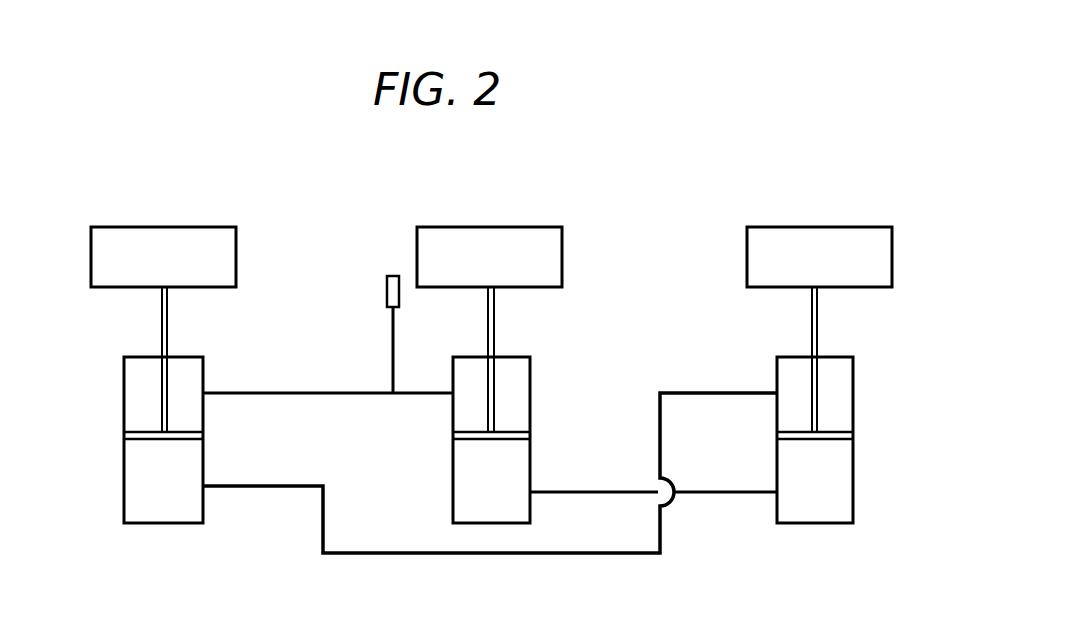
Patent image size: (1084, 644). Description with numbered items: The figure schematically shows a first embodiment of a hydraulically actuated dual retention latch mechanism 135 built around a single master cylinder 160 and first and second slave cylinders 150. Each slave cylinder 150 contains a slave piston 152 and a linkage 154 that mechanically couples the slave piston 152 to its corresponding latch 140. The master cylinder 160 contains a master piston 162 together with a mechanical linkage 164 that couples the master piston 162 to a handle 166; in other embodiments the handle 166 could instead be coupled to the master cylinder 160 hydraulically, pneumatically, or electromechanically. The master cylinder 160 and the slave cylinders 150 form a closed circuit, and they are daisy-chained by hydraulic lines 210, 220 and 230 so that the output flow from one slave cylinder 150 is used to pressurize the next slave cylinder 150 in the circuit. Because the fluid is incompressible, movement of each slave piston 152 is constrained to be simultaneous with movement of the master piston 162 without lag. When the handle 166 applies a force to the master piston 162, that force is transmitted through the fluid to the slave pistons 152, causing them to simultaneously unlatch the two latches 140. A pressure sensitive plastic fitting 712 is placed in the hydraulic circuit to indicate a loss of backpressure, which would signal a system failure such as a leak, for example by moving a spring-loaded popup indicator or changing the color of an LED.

The hydraulically actuated dual retention latch mechanism 135 is at (755, 152).
The latch 140 is at (212, 227).
The linkage 154 is at (165, 318).
The slave cylinder 150 is at (162, 523).
The slave piston 152 is at (138, 440).
The handle 166 is at (531, 227).
The mechanical linkage 164 is at (491, 327).
The master cylinder 160 is at (452, 510).
The master piston 162 is at (463, 440).
The pressure sensitive plastic fitting 712 is at (392, 276).
The hydraulic line 210 is at (415, 553).
The hydraulic line 220 is at (568, 492).
The hydraulic line 230 is at (258, 393).